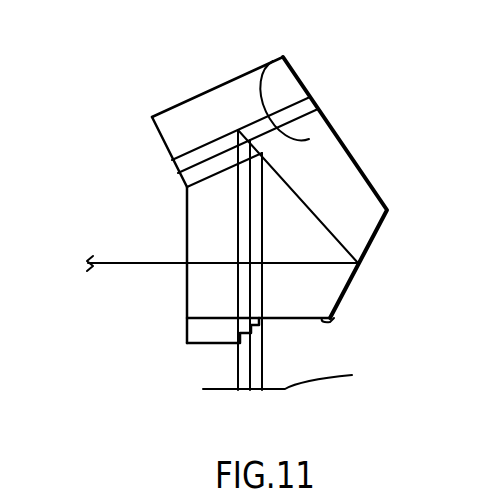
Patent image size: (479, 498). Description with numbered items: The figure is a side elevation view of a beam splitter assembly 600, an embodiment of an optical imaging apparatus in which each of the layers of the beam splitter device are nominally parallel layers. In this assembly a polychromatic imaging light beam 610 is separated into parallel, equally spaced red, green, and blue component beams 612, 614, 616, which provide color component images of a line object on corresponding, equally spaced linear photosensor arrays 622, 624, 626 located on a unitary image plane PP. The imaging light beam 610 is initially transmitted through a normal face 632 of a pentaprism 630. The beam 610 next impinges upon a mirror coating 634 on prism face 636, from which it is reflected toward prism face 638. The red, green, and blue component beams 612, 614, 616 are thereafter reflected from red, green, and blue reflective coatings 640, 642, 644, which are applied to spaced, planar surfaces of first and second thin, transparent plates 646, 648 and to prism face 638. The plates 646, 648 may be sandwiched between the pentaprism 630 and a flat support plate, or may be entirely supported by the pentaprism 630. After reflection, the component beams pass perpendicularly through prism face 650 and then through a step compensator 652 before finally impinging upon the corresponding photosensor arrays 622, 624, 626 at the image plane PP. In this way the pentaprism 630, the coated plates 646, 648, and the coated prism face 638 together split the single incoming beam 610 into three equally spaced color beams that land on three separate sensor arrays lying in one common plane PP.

The beam splitter assembly 600 is at (120, 97).
The polychromatic imaging light beam 610 is at (127, 264).
The red component beam 612 is at (240, 367).
The green component beam 614 is at (253, 363).
The blue component beam 616 is at (265, 340).
The linear photosensor array 622 is at (238, 390).
The linear photosensor array 624 is at (250, 390).
The linear photosensor array 626 is at (262, 392).
The pentaprism 630 is at (398, 195).
The normal face 632 is at (187, 235).
The mirror coating 634 is at (373, 239).
The prism face 636 is at (357, 275).
The prism face 638 is at (323, 132).
The red reflective coating 640 is at (282, 60).
The green reflective coating 642 is at (293, 93).
The blue reflective coating 644 is at (290, 123).
The first thin transparent plate 646 is at (168, 167).
The second thin transparent plate 648 is at (176, 184).
The prism face 650 is at (333, 318).
The step compensator 652 is at (187, 335).
The image plane PP is at (294, 377).